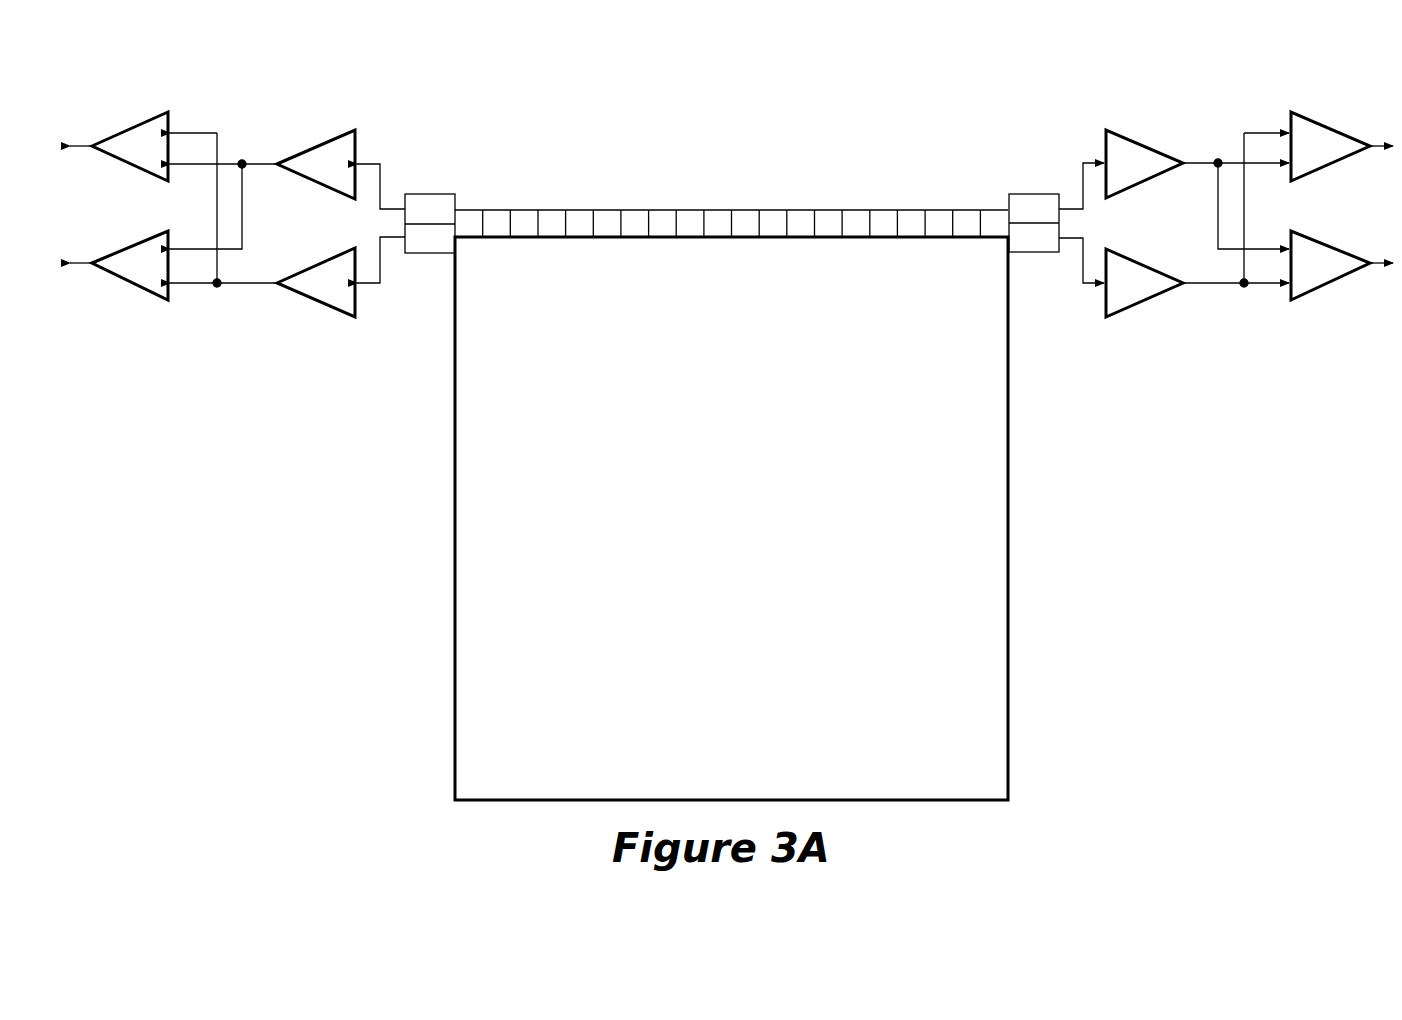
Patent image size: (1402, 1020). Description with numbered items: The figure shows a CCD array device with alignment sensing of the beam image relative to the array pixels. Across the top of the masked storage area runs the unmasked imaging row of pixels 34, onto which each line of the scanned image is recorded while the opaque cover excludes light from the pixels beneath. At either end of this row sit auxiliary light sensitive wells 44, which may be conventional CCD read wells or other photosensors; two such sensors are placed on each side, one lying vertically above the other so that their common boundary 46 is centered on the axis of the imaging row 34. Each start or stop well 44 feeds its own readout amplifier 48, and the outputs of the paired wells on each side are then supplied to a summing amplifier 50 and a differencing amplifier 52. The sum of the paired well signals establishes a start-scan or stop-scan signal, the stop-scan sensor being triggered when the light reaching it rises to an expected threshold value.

The unmasked imaging row of pixels 34 is at (838, 208).
The auxiliary light sensitive wells 44 is at (445, 202).
The common boundary 46 is at (425, 222).
The readout amplifier 48 is at (315, 142).
The summing amplifier 50 is at (135, 122).
The differencing amplifier 52 is at (127, 287).